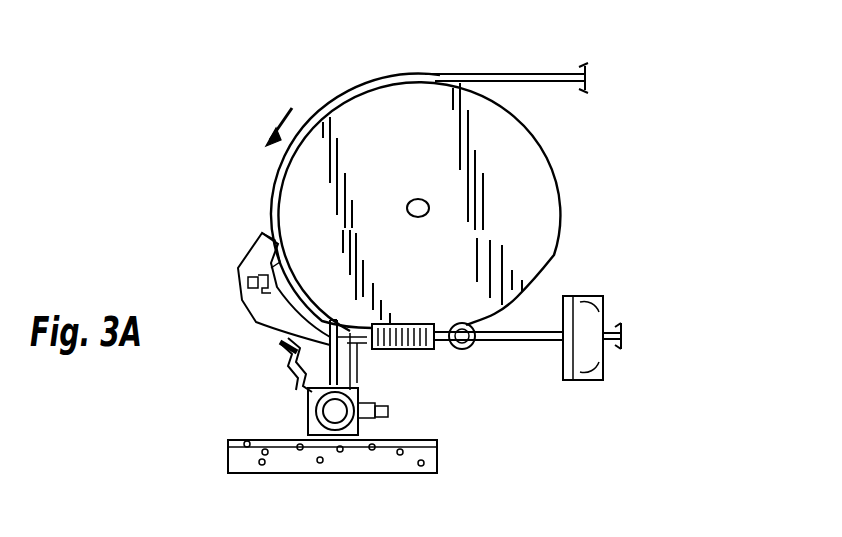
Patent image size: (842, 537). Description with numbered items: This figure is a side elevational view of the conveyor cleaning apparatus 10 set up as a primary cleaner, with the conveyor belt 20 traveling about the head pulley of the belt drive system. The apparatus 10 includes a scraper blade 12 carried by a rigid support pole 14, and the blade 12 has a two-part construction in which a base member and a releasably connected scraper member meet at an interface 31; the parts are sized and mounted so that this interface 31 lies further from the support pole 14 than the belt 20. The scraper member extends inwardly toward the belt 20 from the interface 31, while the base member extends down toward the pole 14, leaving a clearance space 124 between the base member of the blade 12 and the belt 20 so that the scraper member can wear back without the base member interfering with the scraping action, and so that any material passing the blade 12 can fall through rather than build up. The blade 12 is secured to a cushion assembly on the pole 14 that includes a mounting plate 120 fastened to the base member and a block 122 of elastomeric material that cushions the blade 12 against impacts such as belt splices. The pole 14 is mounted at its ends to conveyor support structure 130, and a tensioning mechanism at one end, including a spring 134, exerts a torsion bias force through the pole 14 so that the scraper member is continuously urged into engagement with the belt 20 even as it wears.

The conveyor cleaning apparatus 10 is at (185, 413).
The scraper blade 12 is at (522, 197).
The support pole 14 is at (360, 433).
The conveyor belt 20 is at (505, 72).
The interface 31 is at (228, 283).
The mounting plate 120 is at (292, 348).
The block of elastomeric material 122 is at (537, 130).
The clearance space 124 is at (262, 243).
The conveyor support structure 130 is at (447, 477).
The spring 134 is at (413, 357).